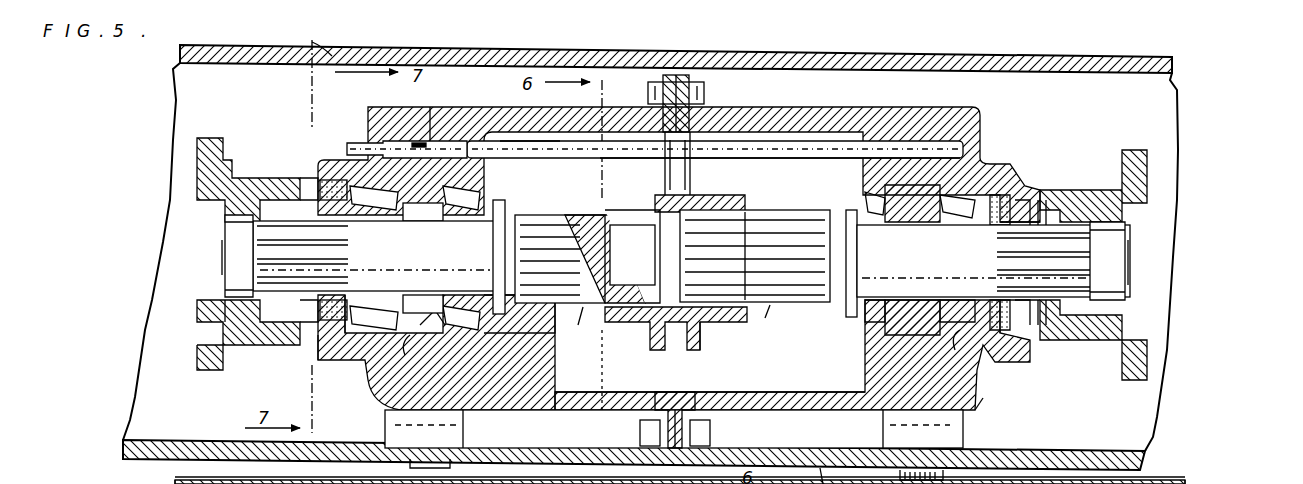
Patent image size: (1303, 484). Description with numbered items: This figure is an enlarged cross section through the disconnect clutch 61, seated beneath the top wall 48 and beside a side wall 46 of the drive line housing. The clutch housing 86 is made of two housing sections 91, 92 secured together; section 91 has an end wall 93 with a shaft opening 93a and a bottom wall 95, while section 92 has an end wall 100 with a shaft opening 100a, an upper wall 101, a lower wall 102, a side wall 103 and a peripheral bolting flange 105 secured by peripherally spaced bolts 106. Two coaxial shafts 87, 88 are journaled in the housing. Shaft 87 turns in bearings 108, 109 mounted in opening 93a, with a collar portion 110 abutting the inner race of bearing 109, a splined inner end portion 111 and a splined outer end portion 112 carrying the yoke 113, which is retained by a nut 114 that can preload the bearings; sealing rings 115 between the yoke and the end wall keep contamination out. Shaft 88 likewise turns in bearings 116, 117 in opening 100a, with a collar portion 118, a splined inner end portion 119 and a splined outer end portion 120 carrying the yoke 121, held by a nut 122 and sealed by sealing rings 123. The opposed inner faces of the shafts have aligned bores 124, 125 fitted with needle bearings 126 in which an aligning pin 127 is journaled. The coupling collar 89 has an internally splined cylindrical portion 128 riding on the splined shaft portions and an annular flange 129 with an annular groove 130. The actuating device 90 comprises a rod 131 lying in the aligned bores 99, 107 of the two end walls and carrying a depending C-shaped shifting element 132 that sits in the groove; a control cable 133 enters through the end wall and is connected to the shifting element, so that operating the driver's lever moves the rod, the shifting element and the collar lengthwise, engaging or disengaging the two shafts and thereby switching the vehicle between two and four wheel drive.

The side wall 46 is at (1175, 120).
The top wall 48 is at (861, 60).
The disconnect clutch 61 is at (676, 148).
The clutch housing 86 is at (988, 393).
The shaft 87 is at (374, 256).
The shaft 88 is at (993, 261).
The coupling collar 89 is at (740, 205).
The actuating device 90 is at (542, 152).
The housing section 91 is at (365, 378).
The housing section 92 is at (980, 412).
The end wall 93 is at (465, 377).
The shaft opening 93a is at (426, 338).
The bottom wall 95 is at (536, 410).
The bore 99 is at (430, 145).
The end wall 100 is at (865, 363).
The shaft opening 100a is at (960, 335).
The upper wall 101 is at (828, 120).
The lower wall 102 is at (788, 406).
The side wall 103 is at (763, 398).
The peripheral bolting flange 105 is at (700, 110).
The bolts 106 is at (706, 93).
The bore 107 is at (890, 148).
The bearing 108 is at (346, 148).
The bearing 109 is at (478, 330).
The collar portion 110 is at (503, 212).
The splined inner end portion 111 is at (579, 328).
The splined outer end portion 112 is at (290, 330).
The yoke 113 is at (205, 370).
The nut 114 is at (225, 276).
The sealing rings 115 is at (320, 180).
The bearing 116 is at (870, 333).
The bearing 117 is at (982, 320).
The collar portion 118 is at (838, 217).
The splined inner end portion 119 is at (783, 317).
The splined outer end portion 120 is at (1035, 234).
The yoke 121 is at (1132, 385).
The nut 122 is at (1130, 270).
The sealing rings 123 is at (1025, 200).
The bore 124 is at (622, 346).
The bore 125 is at (710, 325).
The needle bearings 126 is at (602, 214).
The aligning pin 127 is at (590, 220).
The internally splined cylindrical portion 128 is at (632, 205).
The annular flange 129 is at (687, 352).
The annular groove 130 is at (634, 430).
The rod 131 is at (810, 152).
The shifting element 132 is at (690, 196).
The control cable 133 is at (355, 145).